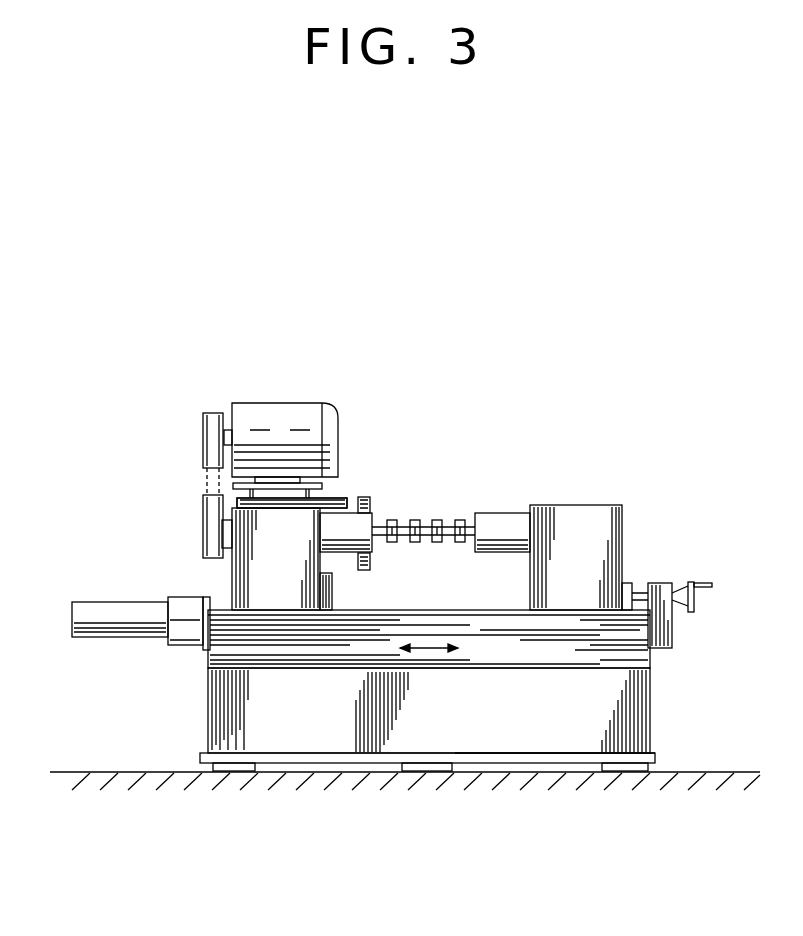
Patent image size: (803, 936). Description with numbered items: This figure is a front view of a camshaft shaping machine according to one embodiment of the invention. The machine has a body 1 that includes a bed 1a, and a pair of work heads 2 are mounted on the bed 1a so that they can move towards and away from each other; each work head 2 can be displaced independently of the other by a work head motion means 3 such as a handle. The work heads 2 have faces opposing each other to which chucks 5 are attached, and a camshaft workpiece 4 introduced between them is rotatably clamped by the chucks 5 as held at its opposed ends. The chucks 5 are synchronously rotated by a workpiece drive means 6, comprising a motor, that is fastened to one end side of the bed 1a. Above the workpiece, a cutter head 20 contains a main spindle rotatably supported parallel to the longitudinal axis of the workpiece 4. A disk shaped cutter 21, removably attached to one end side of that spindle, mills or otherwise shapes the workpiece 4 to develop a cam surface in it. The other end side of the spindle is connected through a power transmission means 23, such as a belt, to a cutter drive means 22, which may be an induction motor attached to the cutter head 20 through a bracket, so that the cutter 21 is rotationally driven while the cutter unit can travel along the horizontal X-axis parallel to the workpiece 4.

The body 1 is at (660, 706).
The bed 1a is at (550, 718).
The work heads 2 is at (232, 583).
The work head motion means 3 is at (690, 585).
The camshaft workpiece 4 is at (438, 521).
The chucks 5 is at (349, 533).
The workpiece drive means 6 is at (122, 628).
The cutter head 20 is at (333, 500).
The disk shaped cutter 21 is at (372, 565).
The cutter drive means 22 is at (318, 422).
The power transmission means 23 is at (210, 475).